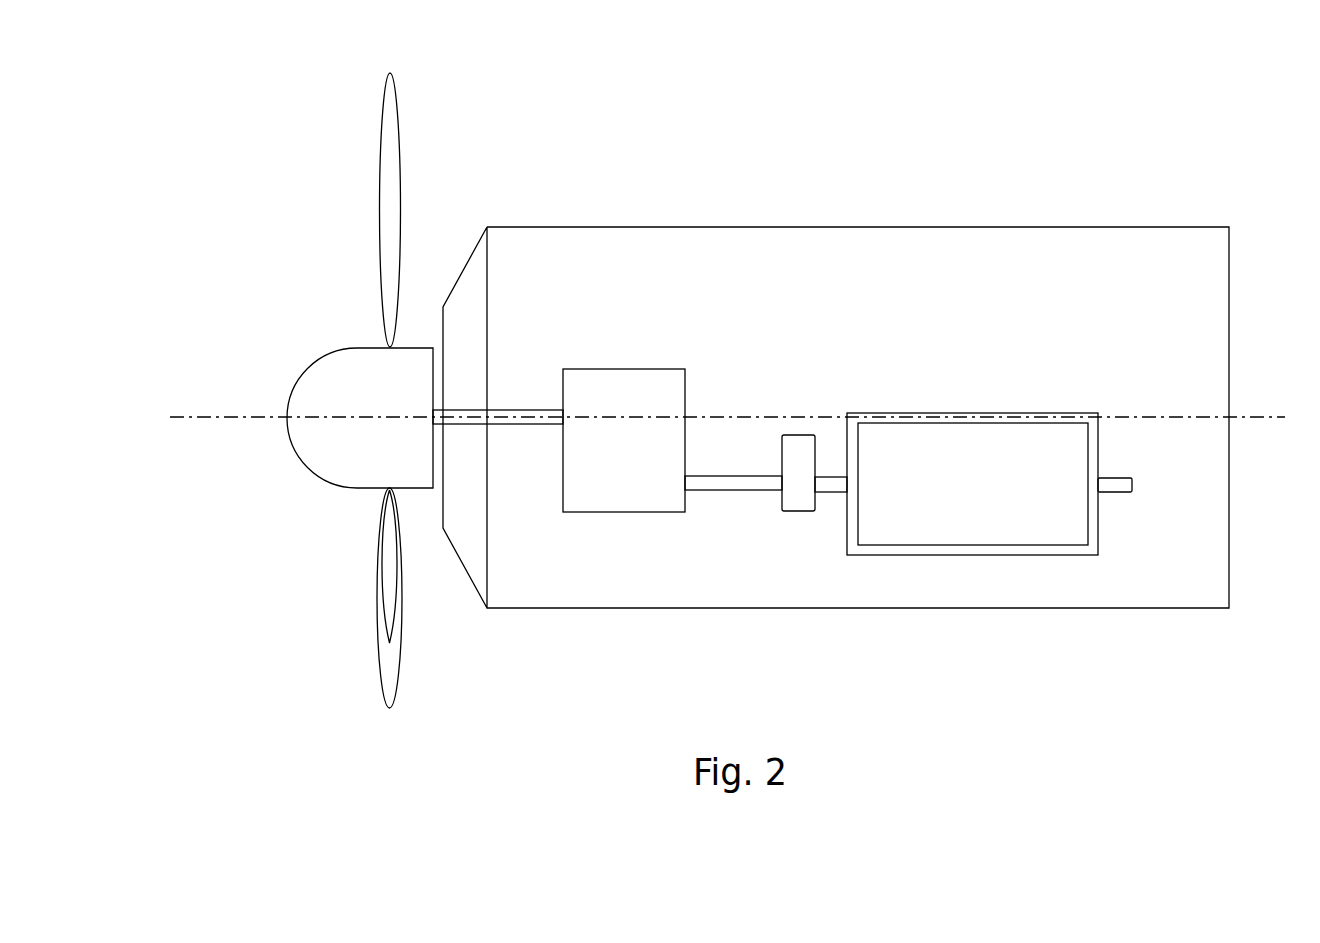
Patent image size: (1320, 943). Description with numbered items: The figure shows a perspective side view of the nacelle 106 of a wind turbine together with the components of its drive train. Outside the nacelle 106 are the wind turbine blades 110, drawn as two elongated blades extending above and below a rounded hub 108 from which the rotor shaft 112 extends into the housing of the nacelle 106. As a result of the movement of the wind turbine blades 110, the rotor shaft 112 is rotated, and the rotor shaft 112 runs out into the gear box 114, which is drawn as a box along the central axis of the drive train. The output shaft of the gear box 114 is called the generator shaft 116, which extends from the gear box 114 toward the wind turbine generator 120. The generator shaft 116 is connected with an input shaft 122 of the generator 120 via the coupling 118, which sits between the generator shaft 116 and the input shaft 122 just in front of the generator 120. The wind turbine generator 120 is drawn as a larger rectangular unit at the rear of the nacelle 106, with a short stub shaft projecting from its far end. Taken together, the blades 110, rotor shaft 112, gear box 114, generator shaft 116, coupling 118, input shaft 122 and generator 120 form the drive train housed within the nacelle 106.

The nacelle 106 is at (1112, 133).
The propeller hub 108 is at (322, 367).
The wind turbine blades 110 is at (366, 153).
The rotor shaft 112 is at (478, 399).
The gear box 114 is at (608, 358).
The generator shaft 116 is at (706, 500).
The coupling 118 is at (793, 424).
The wind turbine generator 120 is at (980, 566).
The input shaft 122 is at (827, 503).